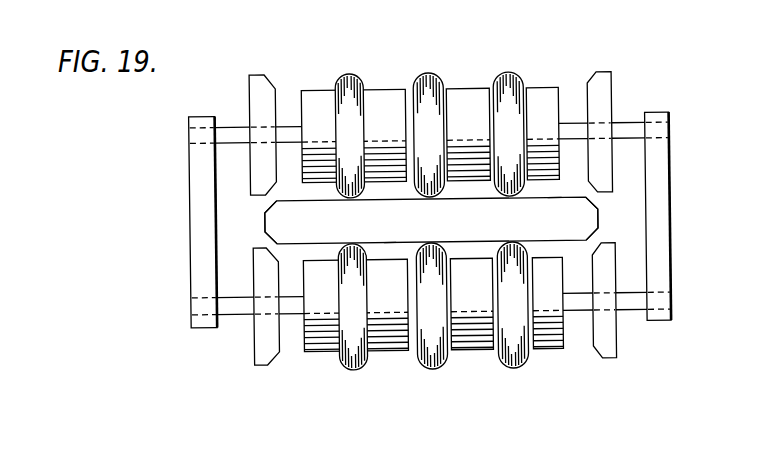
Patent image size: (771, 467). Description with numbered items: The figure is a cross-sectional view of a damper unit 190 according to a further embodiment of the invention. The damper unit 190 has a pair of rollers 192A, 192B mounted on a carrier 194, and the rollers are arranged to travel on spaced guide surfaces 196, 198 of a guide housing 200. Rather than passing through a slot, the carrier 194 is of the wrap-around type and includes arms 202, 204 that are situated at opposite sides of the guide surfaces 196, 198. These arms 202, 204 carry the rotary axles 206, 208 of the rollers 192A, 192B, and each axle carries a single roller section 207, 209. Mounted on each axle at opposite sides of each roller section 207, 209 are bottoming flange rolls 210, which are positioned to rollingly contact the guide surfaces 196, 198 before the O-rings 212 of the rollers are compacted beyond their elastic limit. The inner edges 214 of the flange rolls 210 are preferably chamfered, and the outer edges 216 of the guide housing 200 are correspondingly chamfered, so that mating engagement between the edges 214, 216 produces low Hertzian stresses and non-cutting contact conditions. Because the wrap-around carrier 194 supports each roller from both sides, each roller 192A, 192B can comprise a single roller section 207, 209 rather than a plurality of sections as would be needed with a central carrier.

The damper unit 190 is at (631, 90).
The roller 192A is at (429, 107).
The roller 192B is at (433, 334).
The carrier 194 is at (186, 226).
The guide surface 196 is at (562, 193).
The guide surface 198 is at (392, 247).
The guide housing 200 is at (339, 229).
The arm 202 is at (671, 200).
The arm 204 is at (192, 164).
The rotary axle 206 is at (622, 132).
The roller section 207 is at (483, 88).
The rotary axle 208 is at (636, 314).
The roller section 209 is at (472, 349).
The bottoming flange roll 210 is at (605, 85).
The O-ring 212 is at (345, 371).
The inner edge 214 is at (277, 82).
The outer edge 216 is at (268, 205).